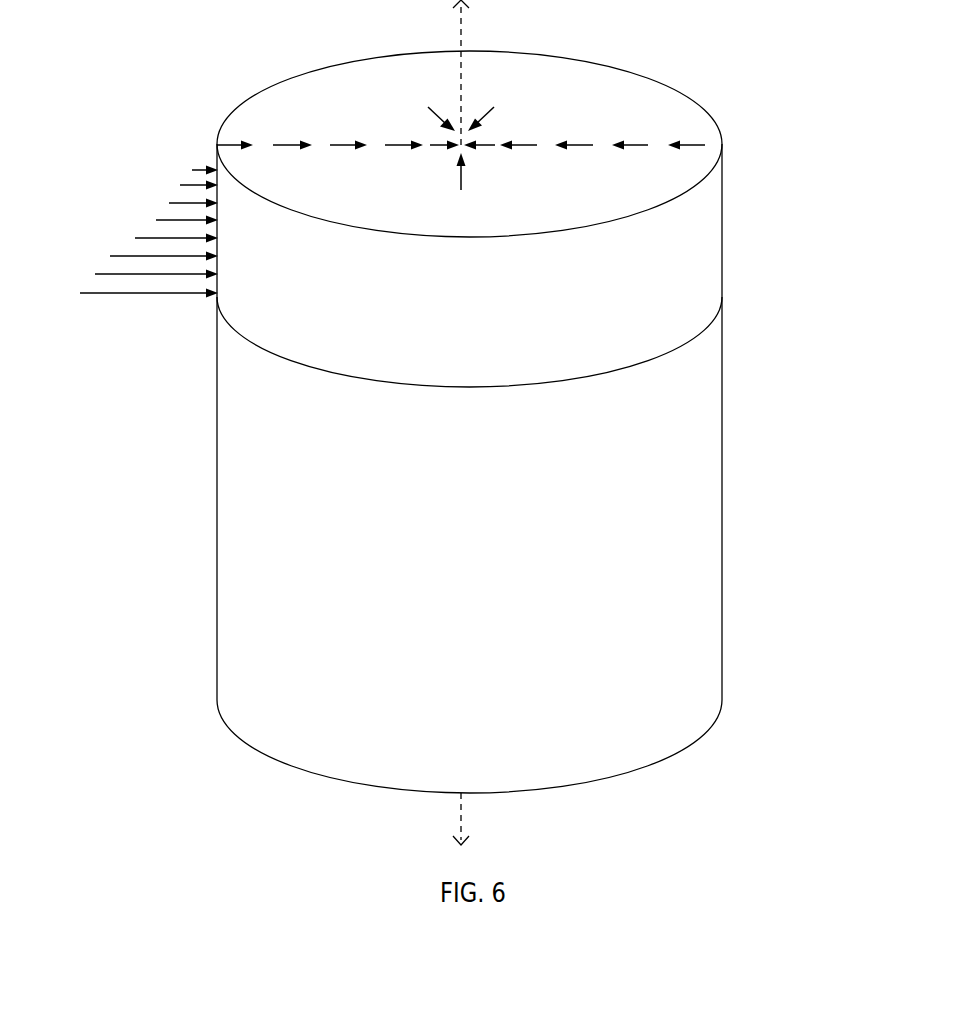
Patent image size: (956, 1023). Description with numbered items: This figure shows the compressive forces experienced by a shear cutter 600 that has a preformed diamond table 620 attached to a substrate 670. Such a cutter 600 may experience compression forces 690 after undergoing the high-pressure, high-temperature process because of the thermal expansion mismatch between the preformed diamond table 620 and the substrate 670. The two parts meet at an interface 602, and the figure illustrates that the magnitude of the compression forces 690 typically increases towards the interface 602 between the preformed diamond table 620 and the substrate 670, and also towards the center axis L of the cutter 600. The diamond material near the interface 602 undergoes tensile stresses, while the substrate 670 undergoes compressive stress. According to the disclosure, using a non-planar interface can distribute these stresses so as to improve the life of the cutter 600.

The cutter 600 is at (214, 53).
The preformed diamond table 620 is at (551, 306).
The interface 602 is at (671, 352).
The substrate 670 is at (478, 567).
The compression forces 690 is at (137, 200).